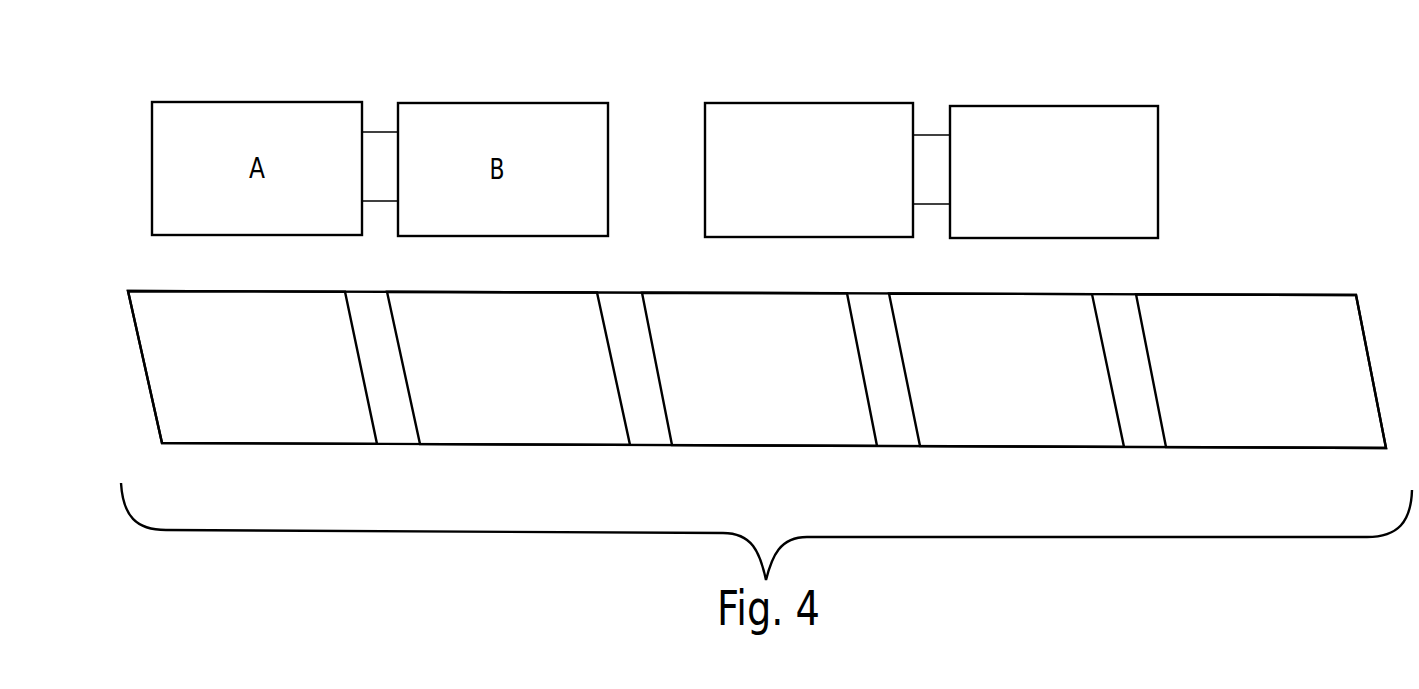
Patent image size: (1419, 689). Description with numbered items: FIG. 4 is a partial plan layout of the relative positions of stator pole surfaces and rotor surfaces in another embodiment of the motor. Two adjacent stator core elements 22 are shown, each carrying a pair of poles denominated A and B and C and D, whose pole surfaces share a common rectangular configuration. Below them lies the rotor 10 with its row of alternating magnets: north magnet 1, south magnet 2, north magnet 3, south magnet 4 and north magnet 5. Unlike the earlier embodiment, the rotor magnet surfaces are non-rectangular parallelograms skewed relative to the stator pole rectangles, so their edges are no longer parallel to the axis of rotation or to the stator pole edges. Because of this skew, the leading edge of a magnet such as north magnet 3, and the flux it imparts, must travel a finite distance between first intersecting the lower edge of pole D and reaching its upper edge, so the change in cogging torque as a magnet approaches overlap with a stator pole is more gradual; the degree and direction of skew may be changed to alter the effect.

The magnet strip 10 is at (884, 462).
The stator core element 22 is at (821, 92).
The north magnet 1 is at (252, 367).
The south magnet 2 is at (508, 368).
The north magnet 3 is at (759, 369).
The south magnet 4 is at (1006, 370).
The north magnet 5 is at (1261, 371).